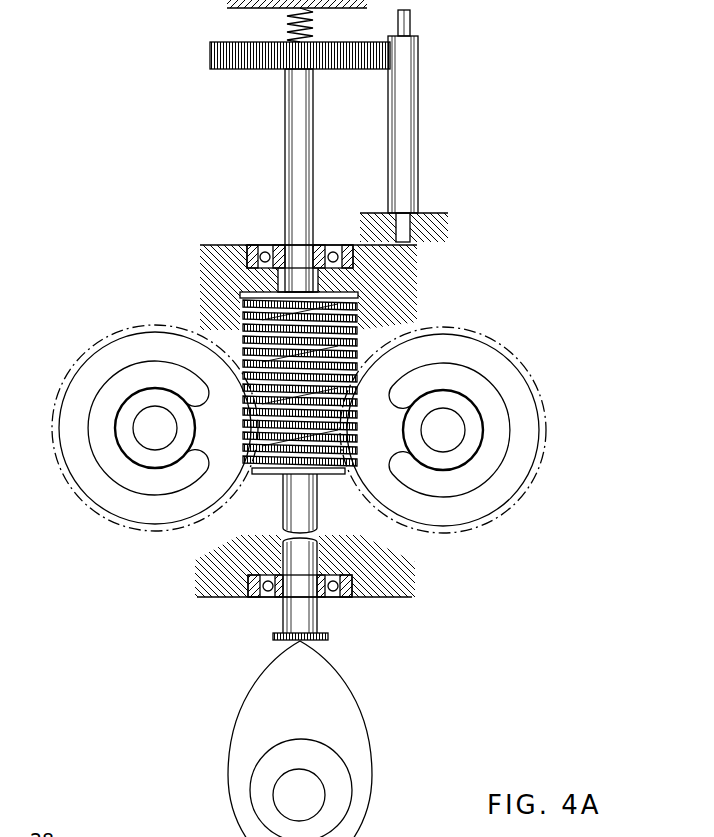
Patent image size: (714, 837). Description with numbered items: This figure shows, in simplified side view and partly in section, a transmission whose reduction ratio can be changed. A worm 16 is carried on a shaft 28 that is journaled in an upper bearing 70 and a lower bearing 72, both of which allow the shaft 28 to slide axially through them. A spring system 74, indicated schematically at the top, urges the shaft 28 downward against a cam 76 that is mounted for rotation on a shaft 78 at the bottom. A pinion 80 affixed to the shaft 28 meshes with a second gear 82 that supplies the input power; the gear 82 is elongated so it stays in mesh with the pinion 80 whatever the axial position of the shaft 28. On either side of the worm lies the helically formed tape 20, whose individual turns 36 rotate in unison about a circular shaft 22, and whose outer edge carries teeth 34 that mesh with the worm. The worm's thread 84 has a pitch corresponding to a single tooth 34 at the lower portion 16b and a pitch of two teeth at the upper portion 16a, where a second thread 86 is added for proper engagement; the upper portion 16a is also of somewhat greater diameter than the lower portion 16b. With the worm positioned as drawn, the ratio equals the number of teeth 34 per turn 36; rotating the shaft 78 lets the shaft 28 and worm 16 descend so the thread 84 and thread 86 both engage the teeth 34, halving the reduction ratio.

The worm 16 is at (289, 398).
The upper portion of the worm 16a is at (245, 310).
The lower portion of the worm 16b is at (257, 440).
The helically formed tape 20 is at (474, 430).
The circular shaft 22 is at (455, 440).
The shaft 28 is at (297, 150).
The teeth 34 is at (468, 330).
The turns of the tape 36 is at (92, 480).
The bearing 70 is at (343, 243).
The bearing 72 is at (368, 597).
The spring system 74 is at (212, 20).
The cam 76 is at (320, 735).
The shaft 78 is at (315, 806).
The pinion 80 is at (233, 69).
The second gear 82 is at (412, 73).
The thread 84 is at (245, 330).
The second thread 86 is at (360, 328).